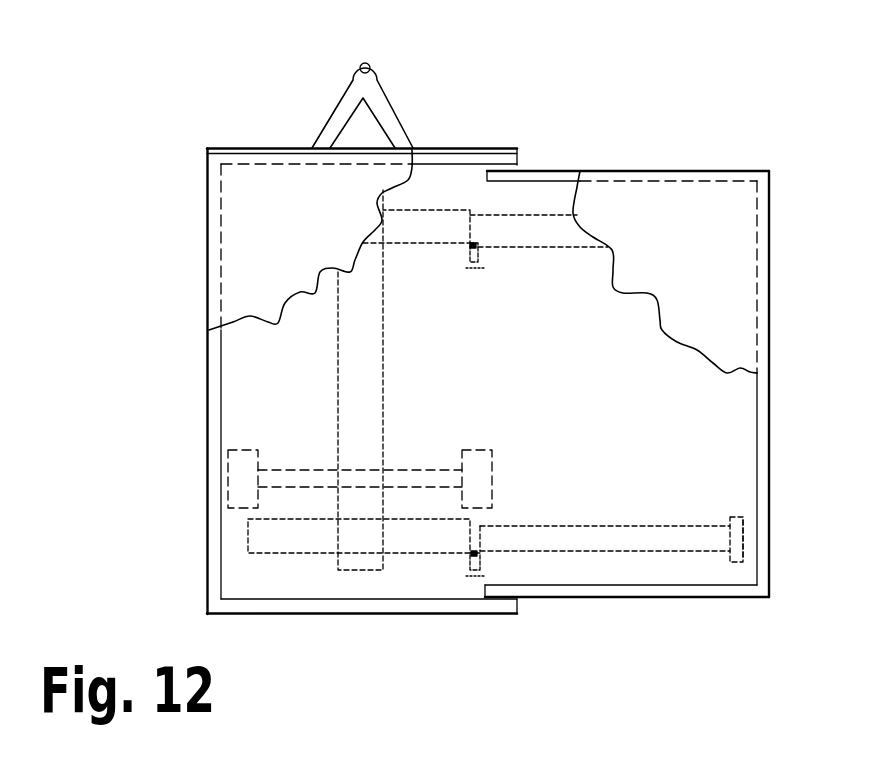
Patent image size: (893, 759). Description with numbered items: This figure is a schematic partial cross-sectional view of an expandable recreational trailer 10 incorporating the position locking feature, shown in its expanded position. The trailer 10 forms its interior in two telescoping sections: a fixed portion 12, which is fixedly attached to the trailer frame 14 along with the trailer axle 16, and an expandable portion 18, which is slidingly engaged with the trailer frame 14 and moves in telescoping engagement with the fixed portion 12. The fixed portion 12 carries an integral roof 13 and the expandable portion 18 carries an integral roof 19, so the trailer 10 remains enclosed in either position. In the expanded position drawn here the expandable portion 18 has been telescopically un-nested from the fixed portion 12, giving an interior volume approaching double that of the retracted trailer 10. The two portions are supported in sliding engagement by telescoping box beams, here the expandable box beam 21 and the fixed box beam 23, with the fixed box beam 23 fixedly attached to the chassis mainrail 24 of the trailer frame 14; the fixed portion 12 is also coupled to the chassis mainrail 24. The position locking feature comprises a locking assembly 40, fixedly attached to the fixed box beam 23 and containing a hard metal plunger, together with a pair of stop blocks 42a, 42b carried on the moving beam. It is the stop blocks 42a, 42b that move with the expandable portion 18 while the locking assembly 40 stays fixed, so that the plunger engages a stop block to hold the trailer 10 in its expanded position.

The trailer 10 is at (161, 131).
The fixed portion 12 is at (207, 293).
The integral roof 13 is at (286, 219).
The trailer frame 14 is at (392, 107).
The trailer axle 16 is at (282, 490).
The expandable portion 18 is at (770, 240).
The integral roof 19 is at (699, 254).
The expandable box beam 21 is at (518, 213).
The fixed box beam 23 is at (428, 208).
The chassis mainrail 24 is at (385, 367).
The locking assembly 40 is at (486, 255).
The stop block 42a is at (487, 552).
The stop block 42b is at (688, 552).